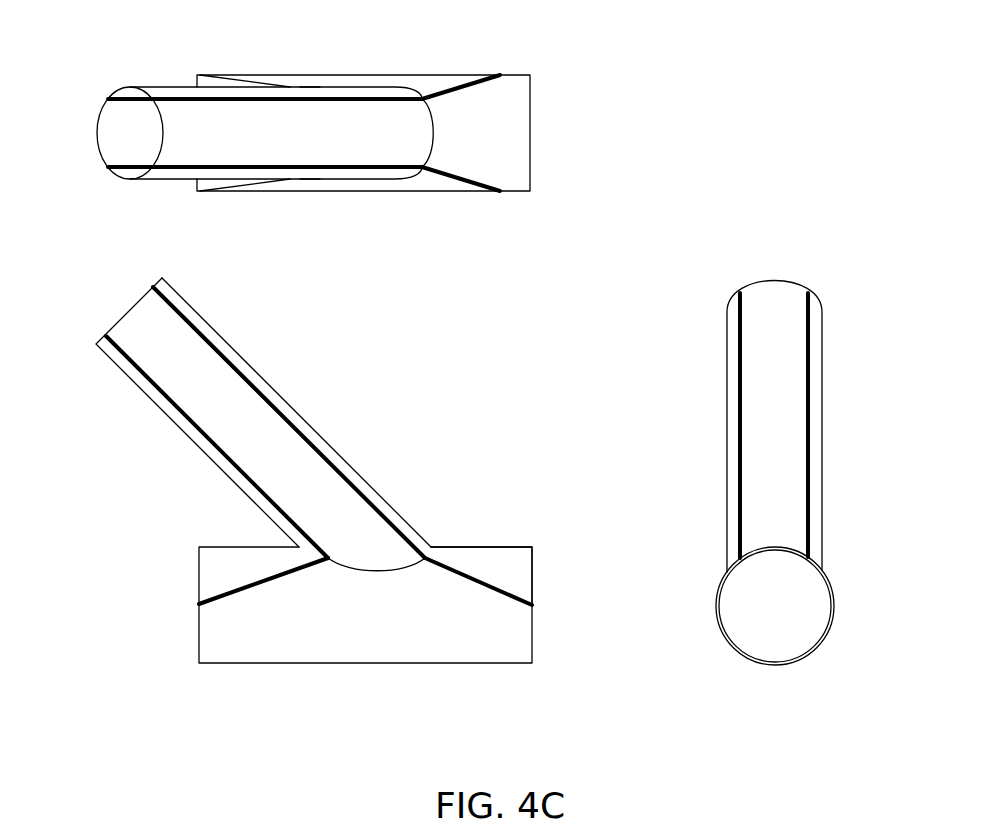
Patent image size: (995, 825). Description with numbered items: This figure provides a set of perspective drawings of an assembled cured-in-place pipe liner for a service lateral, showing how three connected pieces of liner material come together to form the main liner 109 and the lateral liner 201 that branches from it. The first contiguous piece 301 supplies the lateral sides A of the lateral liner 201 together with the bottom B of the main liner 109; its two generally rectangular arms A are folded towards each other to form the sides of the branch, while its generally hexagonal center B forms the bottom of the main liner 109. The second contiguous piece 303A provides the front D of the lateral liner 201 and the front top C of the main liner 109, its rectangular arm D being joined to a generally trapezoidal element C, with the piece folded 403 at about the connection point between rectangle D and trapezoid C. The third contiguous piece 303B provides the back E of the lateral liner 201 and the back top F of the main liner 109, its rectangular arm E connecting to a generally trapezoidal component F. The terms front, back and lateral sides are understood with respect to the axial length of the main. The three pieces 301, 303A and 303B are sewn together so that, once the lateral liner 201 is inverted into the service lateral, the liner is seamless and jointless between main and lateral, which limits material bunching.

The first contiguous piece 301 is at (363, 80).
The second contiguous piece 303A is at (96, 127).
The third contiguous piece 303B is at (463, 167).
The lateral liner 201 is at (287, 445).
The fold 403 is at (297, 547).
The main liner 109 is at (513, 545).
The lateral sides A is at (307, 92).
The bottom B is at (428, 83).
The front top C is at (203, 183).
The front D is at (112, 143).
The back E is at (183, 115).
The back top F is at (512, 120).